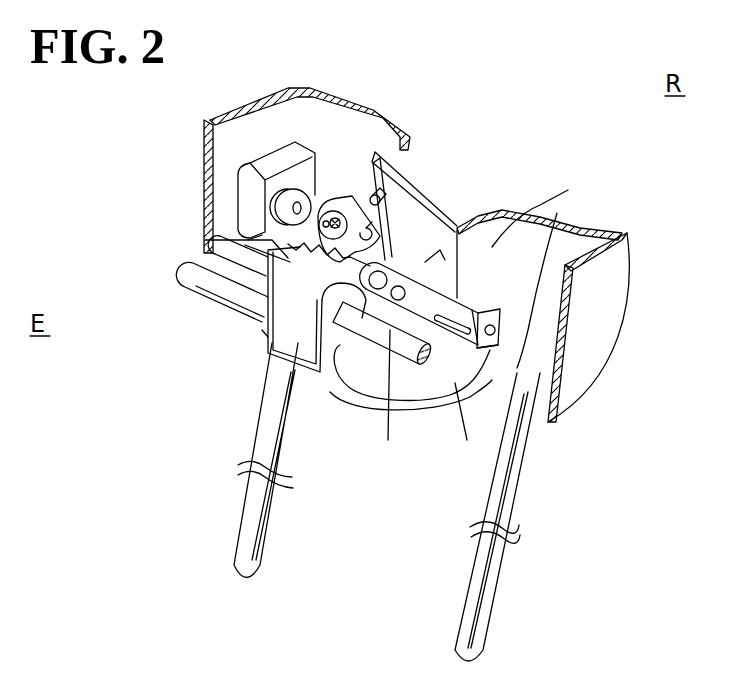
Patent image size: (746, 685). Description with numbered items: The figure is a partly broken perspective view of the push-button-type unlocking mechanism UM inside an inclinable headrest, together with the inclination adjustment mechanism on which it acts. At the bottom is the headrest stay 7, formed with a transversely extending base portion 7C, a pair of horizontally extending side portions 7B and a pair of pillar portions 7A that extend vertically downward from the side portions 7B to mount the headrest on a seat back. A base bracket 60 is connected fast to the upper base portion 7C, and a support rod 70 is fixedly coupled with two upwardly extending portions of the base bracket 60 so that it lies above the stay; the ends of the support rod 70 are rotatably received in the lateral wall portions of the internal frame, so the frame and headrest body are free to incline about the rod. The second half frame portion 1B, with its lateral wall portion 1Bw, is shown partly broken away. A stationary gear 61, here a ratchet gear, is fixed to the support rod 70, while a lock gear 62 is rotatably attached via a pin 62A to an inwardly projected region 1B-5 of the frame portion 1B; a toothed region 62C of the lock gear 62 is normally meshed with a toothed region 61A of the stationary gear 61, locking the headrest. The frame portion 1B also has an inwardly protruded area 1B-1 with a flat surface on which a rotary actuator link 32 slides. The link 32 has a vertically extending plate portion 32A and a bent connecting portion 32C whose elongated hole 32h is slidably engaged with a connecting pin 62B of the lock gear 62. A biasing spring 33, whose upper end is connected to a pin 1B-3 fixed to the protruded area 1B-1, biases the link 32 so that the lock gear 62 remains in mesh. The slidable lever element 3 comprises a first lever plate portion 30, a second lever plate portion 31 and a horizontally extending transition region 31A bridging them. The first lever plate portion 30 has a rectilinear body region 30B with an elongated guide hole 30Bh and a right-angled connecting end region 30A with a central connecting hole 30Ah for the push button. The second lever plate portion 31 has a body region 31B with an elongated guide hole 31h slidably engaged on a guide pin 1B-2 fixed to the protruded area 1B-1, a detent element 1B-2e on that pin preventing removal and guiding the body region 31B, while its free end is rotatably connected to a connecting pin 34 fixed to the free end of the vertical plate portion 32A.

The second half frame portion 1B is at (400, 286).
The lateral wall portion 1Bw is at (204, 163).
The inwardly protruded area 1B-1 is at (553, 272).
The guide pin 1B-2 is at (448, 240).
The detent element 1B-2e is at (362, 335).
The pin 1B-3 is at (392, 150).
The inwardly projected region 1B-5 is at (245, 207).
The slidable lever element 3 is at (487, 280).
The first lever plate portion 30 is at (403, 330).
The right-angled connecting end region 30A is at (530, 313).
The connecting hole 30Ah is at (500, 344).
The body region 30B is at (432, 330).
The elongated guide hole 30Bh is at (415, 335).
The second lever plate portion 31 is at (466, 244).
The horizontally extending transition region 31A is at (500, 222).
The body region 31B is at (428, 262).
The elongated guide hole 31h is at (376, 330).
The rotary actuator link 32 is at (380, 188).
The vertically extending plate portion 32A is at (410, 235).
The bent connecting portion 32C is at (333, 211).
The elongated hole 32h is at (348, 208).
The biasing spring 33 is at (396, 198).
The connecting pin 34 is at (353, 332).
The base bracket 60 is at (270, 318).
The stationary gear 61 is at (262, 285).
The toothed region 61A is at (213, 238).
The lock gear 62 is at (296, 193).
The pin 62A is at (288, 197).
The connecting pin 62B is at (338, 212).
The toothed region 62C is at (262, 337).
The headrest stay 7 is at (548, 486).
The pillar portion 7A is at (250, 442).
The side portion 7B is at (212, 248).
The base portion 7C is at (208, 303).
The support rod 70 is at (192, 276).
The unlocking mechanism UM is at (531, 82).